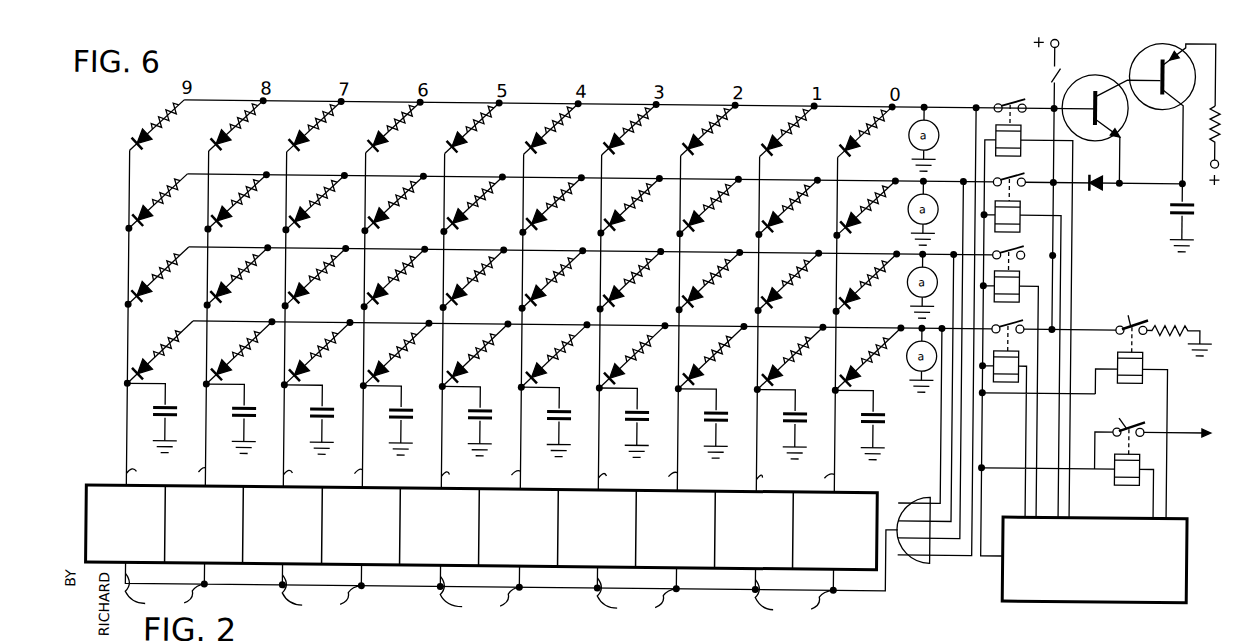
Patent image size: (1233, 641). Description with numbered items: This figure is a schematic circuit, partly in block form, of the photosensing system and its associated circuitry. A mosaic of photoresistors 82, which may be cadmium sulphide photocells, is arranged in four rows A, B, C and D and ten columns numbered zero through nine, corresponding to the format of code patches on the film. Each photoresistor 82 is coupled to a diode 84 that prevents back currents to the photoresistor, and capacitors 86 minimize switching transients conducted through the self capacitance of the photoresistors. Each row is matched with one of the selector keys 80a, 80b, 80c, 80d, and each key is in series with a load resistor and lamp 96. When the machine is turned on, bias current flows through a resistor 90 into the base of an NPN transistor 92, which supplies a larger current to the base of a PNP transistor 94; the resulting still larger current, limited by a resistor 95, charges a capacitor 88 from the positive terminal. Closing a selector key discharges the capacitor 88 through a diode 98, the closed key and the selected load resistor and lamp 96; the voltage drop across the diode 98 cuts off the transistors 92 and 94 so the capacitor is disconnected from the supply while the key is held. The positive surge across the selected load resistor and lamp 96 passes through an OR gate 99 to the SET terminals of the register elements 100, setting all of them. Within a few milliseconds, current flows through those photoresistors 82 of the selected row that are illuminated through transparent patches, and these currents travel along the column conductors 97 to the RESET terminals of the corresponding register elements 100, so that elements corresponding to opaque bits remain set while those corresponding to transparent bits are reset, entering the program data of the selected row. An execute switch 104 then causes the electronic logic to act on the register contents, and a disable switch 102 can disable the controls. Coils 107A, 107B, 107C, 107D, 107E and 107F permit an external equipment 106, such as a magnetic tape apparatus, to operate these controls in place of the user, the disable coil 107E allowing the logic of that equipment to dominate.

The selector key 80a is at (1006, 100).
The selector key 80b is at (1008, 175).
The selector key 80c is at (1012, 248).
The selector key 80d is at (1010, 322).
The photoresistor 82 is at (223, 138).
The diode 84 is at (133, 222).
The capacitor 86 is at (246, 418).
The capacitor 88 is at (1187, 207).
The resistor 90 is at (1048, 60).
The NPN transistor 92 is at (1100, 72).
The PNP transistor 94 is at (1136, 54).
The resistor 95 is at (1208, 114).
The load resistor and lamp 96 is at (898, 163).
The column conductor 97 is at (128, 257).
The diode 98 is at (1096, 186).
The OR gate 99 is at (918, 560).
The register element 100 is at (86, 523).
The disable switch 102 is at (1158, 318).
The execute switch 104 is at (1150, 430).
The external equipment 106 is at (1098, 598).
The coil 107A is at (994, 131).
The coil 107B is at (1062, 217).
The coil 107C is at (1018, 270).
The coil 107D is at (992, 373).
The disable coil 107E is at (1118, 360).
The coil 107F is at (1134, 482).